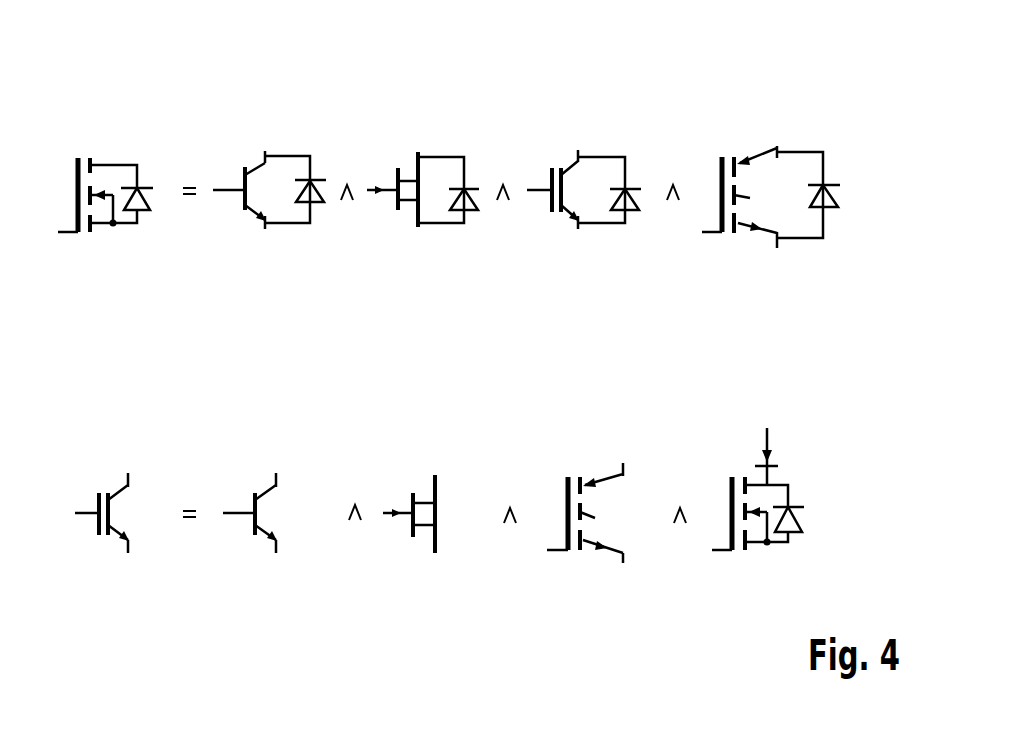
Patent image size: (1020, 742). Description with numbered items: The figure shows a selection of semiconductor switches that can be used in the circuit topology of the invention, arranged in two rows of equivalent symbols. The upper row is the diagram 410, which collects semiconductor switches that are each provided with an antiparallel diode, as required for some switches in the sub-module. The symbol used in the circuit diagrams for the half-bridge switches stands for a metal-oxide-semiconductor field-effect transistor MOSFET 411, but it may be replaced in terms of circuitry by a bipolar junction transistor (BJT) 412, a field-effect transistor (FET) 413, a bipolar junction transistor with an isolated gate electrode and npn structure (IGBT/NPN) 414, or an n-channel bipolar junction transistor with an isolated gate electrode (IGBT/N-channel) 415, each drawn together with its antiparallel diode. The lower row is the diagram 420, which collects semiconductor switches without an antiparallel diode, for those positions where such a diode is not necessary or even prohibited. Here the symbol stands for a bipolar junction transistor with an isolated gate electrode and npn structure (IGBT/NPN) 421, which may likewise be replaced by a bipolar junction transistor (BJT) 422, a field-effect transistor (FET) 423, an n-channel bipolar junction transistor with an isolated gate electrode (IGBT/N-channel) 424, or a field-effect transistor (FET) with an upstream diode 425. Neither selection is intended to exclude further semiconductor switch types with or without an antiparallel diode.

The diagram of semiconductor switches with an antiparallel diode 410 is at (800, 100).
The metal-oxide-semiconductor field-effect transistor MOSFET 411 is at (78, 233).
The bipolar junction transistor (BJT) 412 is at (288, 224).
The field-effect transistor (FET) 413 is at (440, 224).
The bipolar junction transistor with an isolated gate electrode and npn structure (I 414 is at (600, 224).
The n-channel bipolar junction transistor with an isolated gate electrode (IGBT/N-ch 415 is at (798, 239).
The diagram of semiconductor switches without an antiparallel diode 420 is at (808, 423).
The bipolar junction transistor with an isolated gate electrode and npn structure (I 421 is at (90, 514).
The bipolar junction transistor (BJT) 422 is at (243, 514).
The field-effect transistor (FET) 423 is at (393, 514).
The n-channel bipolar junction transistor with an isolated gate electrode (IGBT/N-ch 424 is at (560, 551).
The field-effect transistor (FET) with an upstream diode 425 is at (723, 551).